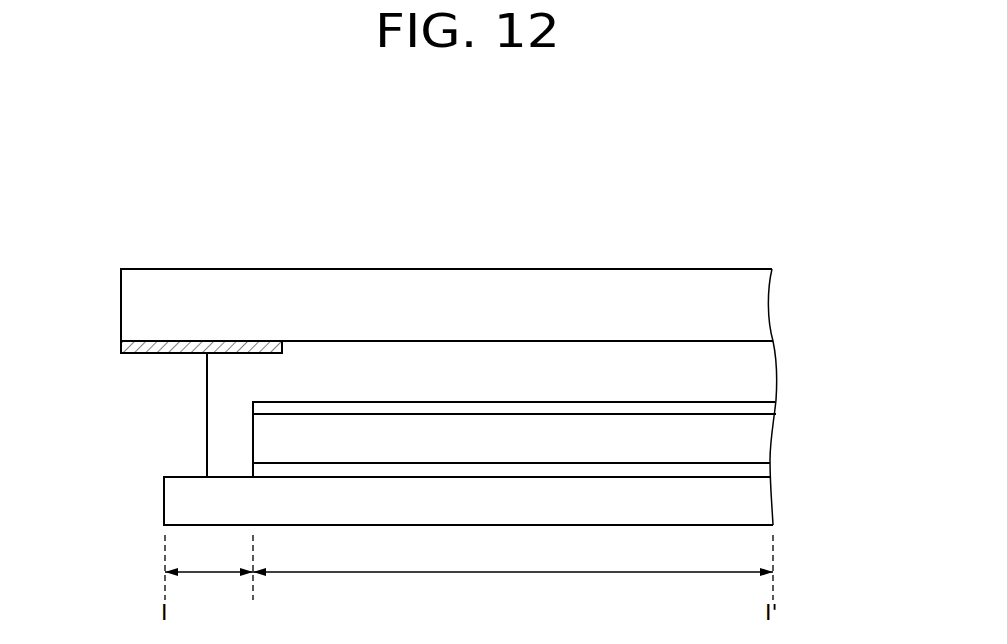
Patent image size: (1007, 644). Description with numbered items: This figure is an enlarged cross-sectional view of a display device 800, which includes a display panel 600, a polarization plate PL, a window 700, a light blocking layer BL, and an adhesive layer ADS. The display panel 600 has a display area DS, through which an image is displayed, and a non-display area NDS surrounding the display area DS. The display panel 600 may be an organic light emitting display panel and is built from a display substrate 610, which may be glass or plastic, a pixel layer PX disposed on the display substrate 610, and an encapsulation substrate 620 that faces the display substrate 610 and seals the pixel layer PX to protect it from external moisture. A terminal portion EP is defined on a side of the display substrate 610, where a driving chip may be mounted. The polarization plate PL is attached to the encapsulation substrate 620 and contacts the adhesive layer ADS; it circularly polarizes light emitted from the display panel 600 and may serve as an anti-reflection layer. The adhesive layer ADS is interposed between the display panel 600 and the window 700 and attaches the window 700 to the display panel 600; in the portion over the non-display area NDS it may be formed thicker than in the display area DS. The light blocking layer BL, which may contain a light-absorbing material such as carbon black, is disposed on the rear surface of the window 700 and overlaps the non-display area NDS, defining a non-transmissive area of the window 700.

The display device 800 is at (697, 204).
The window 700 is at (758, 308).
The light blocking layer BL is at (158, 349).
The adhesive layer ADS is at (763, 376).
The terminal portion EP is at (178, 477).
The polarization plate PL is at (765, 405).
The encapsulation substrate 620 is at (765, 441).
The pixel layer PX is at (760, 469).
The display substrate 610 is at (765, 500).
The display panel 600 is at (865, 427).
The non-display area NDS is at (209, 571).
The display area DS is at (513, 571).